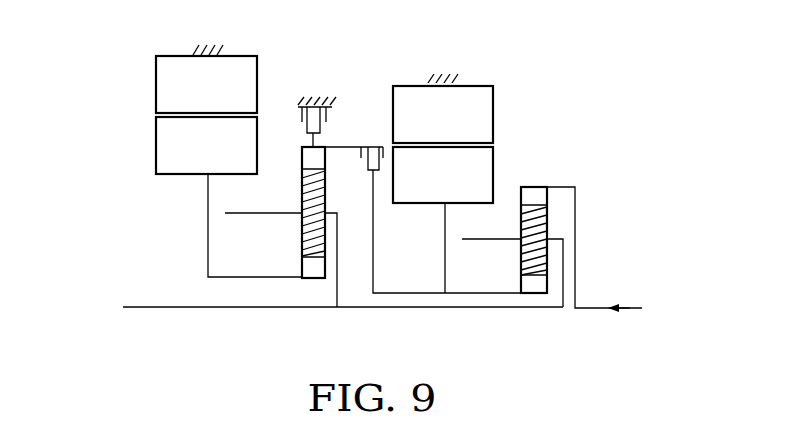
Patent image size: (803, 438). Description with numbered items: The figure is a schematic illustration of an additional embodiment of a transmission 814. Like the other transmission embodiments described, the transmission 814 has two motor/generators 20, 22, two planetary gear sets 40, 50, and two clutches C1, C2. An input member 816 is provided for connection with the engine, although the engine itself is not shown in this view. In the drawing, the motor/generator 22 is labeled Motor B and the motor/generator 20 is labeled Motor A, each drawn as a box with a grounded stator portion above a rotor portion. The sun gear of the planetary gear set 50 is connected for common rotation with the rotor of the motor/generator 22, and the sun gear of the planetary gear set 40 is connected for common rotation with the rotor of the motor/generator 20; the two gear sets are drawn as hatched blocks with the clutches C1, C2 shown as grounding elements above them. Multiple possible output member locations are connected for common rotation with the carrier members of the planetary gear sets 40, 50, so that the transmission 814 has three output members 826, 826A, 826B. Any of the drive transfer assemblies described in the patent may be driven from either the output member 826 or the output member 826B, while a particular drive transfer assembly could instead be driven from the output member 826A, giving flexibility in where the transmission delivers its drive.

The motor/generator 22 is at (140, 133).
The motor/generator 20 is at (508, 148).
The transmission 814 is at (528, 96).
The clutch C1 is at (294, 117).
The clutch C2 is at (356, 163).
The planetary gear set 50 is at (288, 247).
The planetary gear set 40 is at (552, 260).
The output member 826A is at (288, 214).
The output member 826B is at (156, 308).
The output member 826 is at (509, 240).
The input member 816 is at (597, 309).